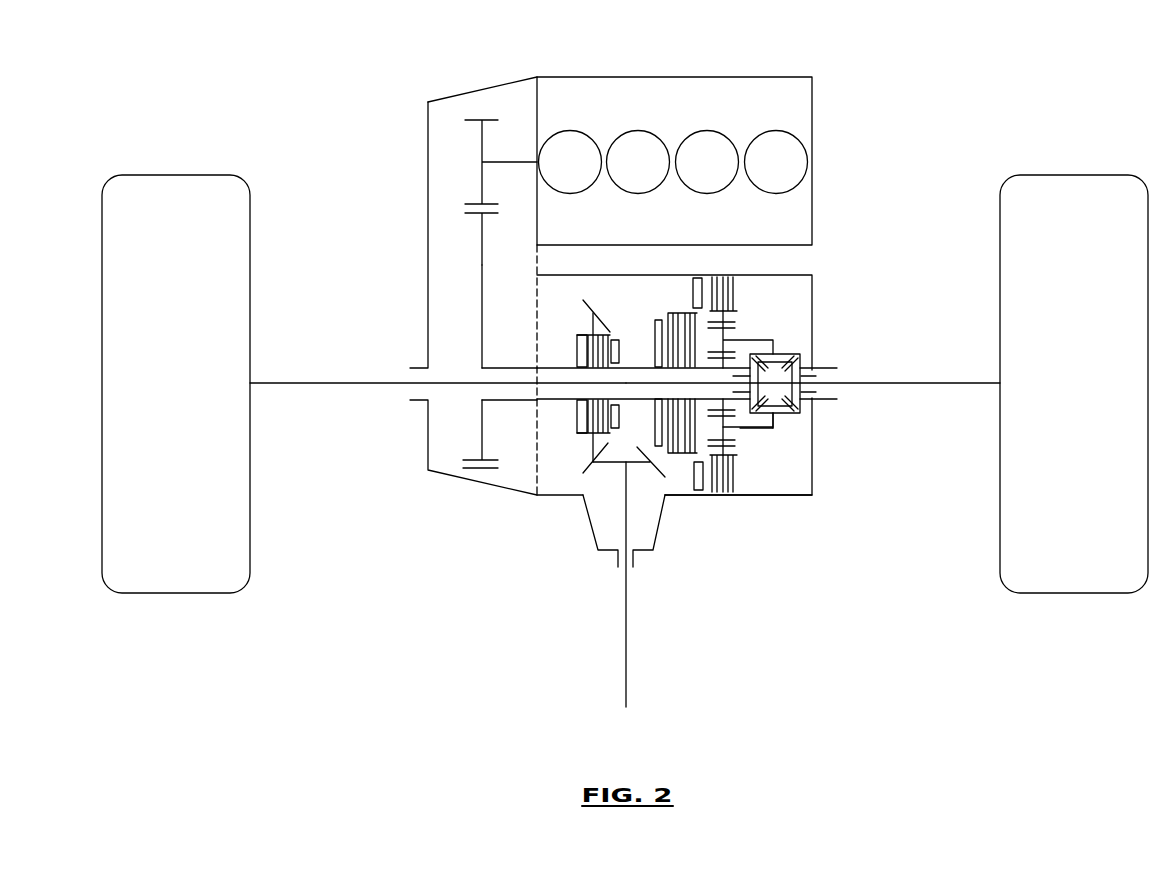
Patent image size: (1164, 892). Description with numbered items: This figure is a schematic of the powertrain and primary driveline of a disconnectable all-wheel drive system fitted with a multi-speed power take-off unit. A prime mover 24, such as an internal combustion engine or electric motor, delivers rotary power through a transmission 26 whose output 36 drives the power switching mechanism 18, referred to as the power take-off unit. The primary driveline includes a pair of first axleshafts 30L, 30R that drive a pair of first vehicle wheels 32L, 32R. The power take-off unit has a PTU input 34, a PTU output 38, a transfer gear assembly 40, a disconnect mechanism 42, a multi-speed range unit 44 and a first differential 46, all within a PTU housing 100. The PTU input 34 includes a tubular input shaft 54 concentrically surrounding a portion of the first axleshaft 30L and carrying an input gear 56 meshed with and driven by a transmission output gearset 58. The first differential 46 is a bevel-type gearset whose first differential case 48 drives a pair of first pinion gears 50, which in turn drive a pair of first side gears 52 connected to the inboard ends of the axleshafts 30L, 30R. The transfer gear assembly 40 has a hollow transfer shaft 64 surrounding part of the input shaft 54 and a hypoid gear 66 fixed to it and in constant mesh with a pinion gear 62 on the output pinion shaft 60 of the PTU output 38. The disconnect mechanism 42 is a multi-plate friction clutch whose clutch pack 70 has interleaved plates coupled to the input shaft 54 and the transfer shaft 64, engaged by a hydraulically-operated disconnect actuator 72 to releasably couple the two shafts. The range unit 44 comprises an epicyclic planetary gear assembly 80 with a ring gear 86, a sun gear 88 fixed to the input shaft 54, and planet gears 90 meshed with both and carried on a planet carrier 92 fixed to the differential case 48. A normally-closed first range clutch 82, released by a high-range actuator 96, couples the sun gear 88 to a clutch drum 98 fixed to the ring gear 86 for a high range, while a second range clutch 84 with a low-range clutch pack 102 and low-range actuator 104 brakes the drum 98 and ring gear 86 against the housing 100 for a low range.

The power switching mechanism 18 is at (759, 517).
The prime mover 24 is at (791, 73).
The transmission 26 is at (511, 78).
The first axleshaft 30L is at (297, 380).
The first axleshaft 30R is at (938, 382).
The first vehicle wheel 32L is at (171, 195).
The first vehicle wheel 32R is at (1060, 193).
The PTU input 34 is at (468, 408).
The output 36 is at (460, 210).
The PTU output 38 is at (605, 583).
The transfer gear assembly 40 is at (575, 468).
The disconnect mechanism 42 is at (575, 413).
The multi-speed range unit 44 is at (777, 440).
The first differential 46 is at (800, 348).
The first differential case 48 is at (813, 403).
The first pinion gears 50 is at (782, 414).
The first side gears 52 is at (815, 381).
The tubular input shaft 54 is at (507, 368).
The input gear 56 is at (482, 330).
The transmission output gearset 58 is at (482, 263).
The output pinion shaft 60 is at (628, 602).
The pinion gear 62 is at (602, 475).
The hollow transfer shaft 64 is at (585, 335).
The hypoid gear 66 is at (583, 301).
The clutch pack 70 is at (590, 357).
The disconnect actuator 72 is at (617, 358).
The epicyclic planetary gear assembly 80 is at (745, 332).
The first range clutch 82 is at (676, 308).
The second range clutch 84 is at (748, 277).
The ring gear 86 is at (748, 449).
The sun gear 88 is at (727, 352).
The planet gears 90 is at (686, 454).
The planet carrier 92 is at (770, 426).
The high-range actuator 96 is at (658, 320).
The clutch drum 98 is at (722, 428).
The PTU housing 100 is at (751, 311).
The low-range clutch pack 102 is at (725, 473).
The low-range actuator 104 is at (698, 491).